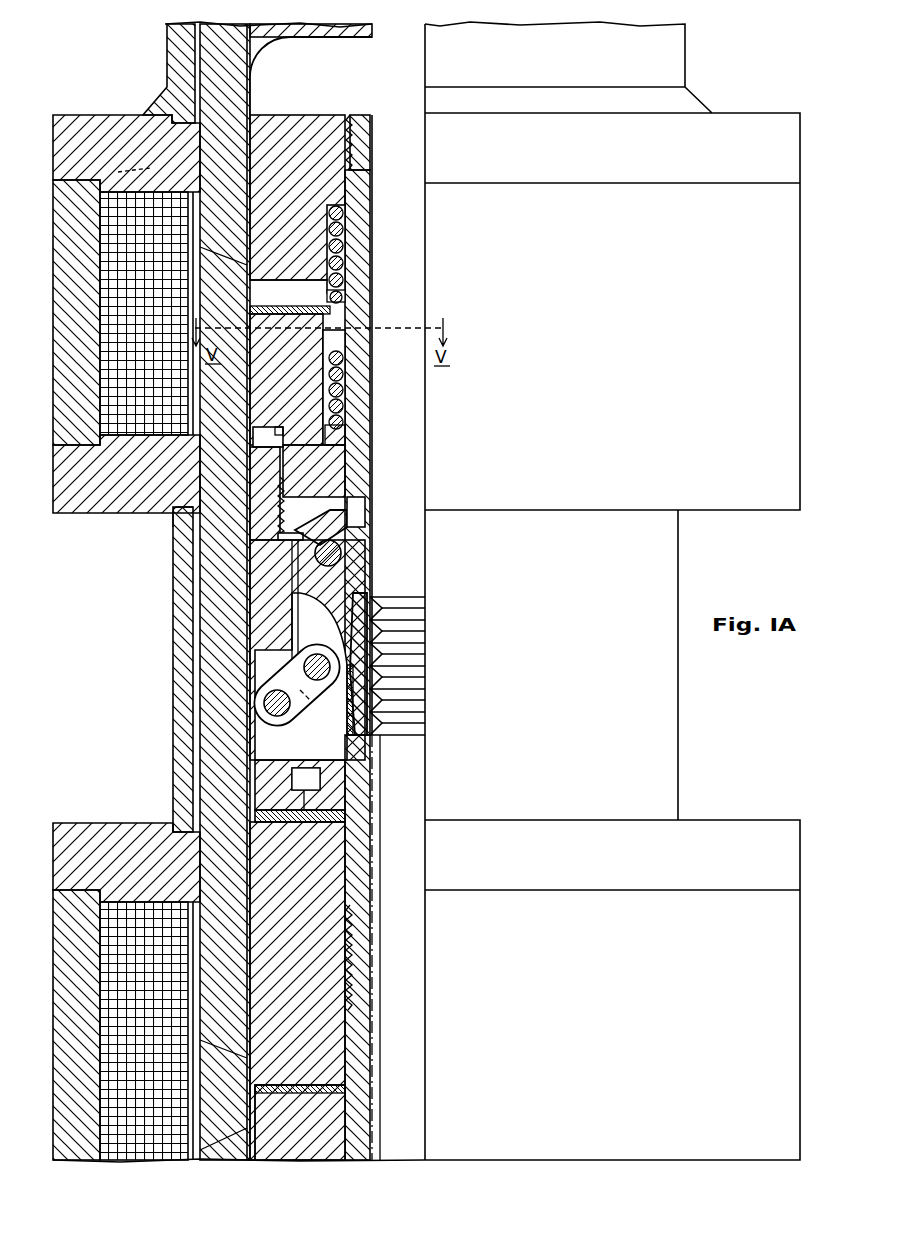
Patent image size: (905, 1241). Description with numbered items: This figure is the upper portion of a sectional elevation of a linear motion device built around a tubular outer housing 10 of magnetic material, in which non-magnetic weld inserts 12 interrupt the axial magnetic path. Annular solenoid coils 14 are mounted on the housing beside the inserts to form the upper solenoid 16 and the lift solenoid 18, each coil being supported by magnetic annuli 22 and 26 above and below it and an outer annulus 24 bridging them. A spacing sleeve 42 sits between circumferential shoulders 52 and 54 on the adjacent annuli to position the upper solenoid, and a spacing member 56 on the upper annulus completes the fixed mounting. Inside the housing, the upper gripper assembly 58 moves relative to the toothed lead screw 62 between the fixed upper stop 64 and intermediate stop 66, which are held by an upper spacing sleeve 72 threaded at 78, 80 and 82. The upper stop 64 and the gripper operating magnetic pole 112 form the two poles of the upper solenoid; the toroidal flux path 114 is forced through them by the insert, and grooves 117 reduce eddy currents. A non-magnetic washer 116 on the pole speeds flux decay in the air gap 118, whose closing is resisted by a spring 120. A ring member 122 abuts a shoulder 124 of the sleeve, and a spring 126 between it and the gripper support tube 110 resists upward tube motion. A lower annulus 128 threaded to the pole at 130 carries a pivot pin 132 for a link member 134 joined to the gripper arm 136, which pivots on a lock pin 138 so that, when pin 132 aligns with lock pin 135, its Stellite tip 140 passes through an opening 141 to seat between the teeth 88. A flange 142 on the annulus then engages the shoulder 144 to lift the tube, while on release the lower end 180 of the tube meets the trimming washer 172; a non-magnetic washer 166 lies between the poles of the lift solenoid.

The tubular outer housing 10 is at (215, 622).
The weld insert 12 is at (244, 293).
The solenoid coil 14 is at (126, 432).
The upper solenoid 16 is at (77, 505).
The lift solenoid 18 is at (68, 830).
The upper annulus 22 is at (80, 116).
The outer annulus 24 is at (55, 183).
The lower annulus 26 is at (101, 512).
The spacing sleeve 42 is at (176, 600).
The circumferential shoulder 52 is at (174, 830).
The circumferential shoulder 54 is at (176, 511).
The spacing member 56 is at (167, 47).
The upper gripper assembly 58 is at (406, 576).
The lead screw 62 is at (417, 761).
The upper stop 64 is at (307, 116).
The intermediate stop 66 is at (335, 918).
The upper spacing sleeve 72 is at (365, 406).
The threads 78 is at (358, 982).
The threads 80 is at (355, 892).
The threads 82 is at (351, 150).
The teeth 88 is at (370, 709).
The gripper support tube 110 is at (340, 443).
The gripper operating magnetic pole 112 is at (310, 470).
The magnetic flux path 114 is at (118, 172).
The non-magnetic washer 116 is at (287, 308).
The grooves 117 is at (370, 317).
The air gap 118 is at (318, 292).
The spring 120 is at (339, 228).
The ring member 122 is at (346, 352).
The shoulder 124 is at (348, 340).
The spring 126 is at (349, 385).
The lower annulus 128 is at (280, 507).
The threaded connection 130 is at (288, 493).
The pivot pin 132 is at (269, 720).
The link member 134 is at (290, 676).
The lock pin 135 is at (312, 648).
The gripper arm 136 is at (345, 610).
The lock pin 138 is at (333, 555).
The Stellite tip 140 is at (368, 675).
The opening 141 is at (358, 519).
The flange 142 is at (297, 782).
The shoulder 144 is at (333, 762).
The non-magnetic washer 166 is at (340, 1100).
The trimming washer 172 is at (340, 818).
The lower end 180 is at (345, 780).